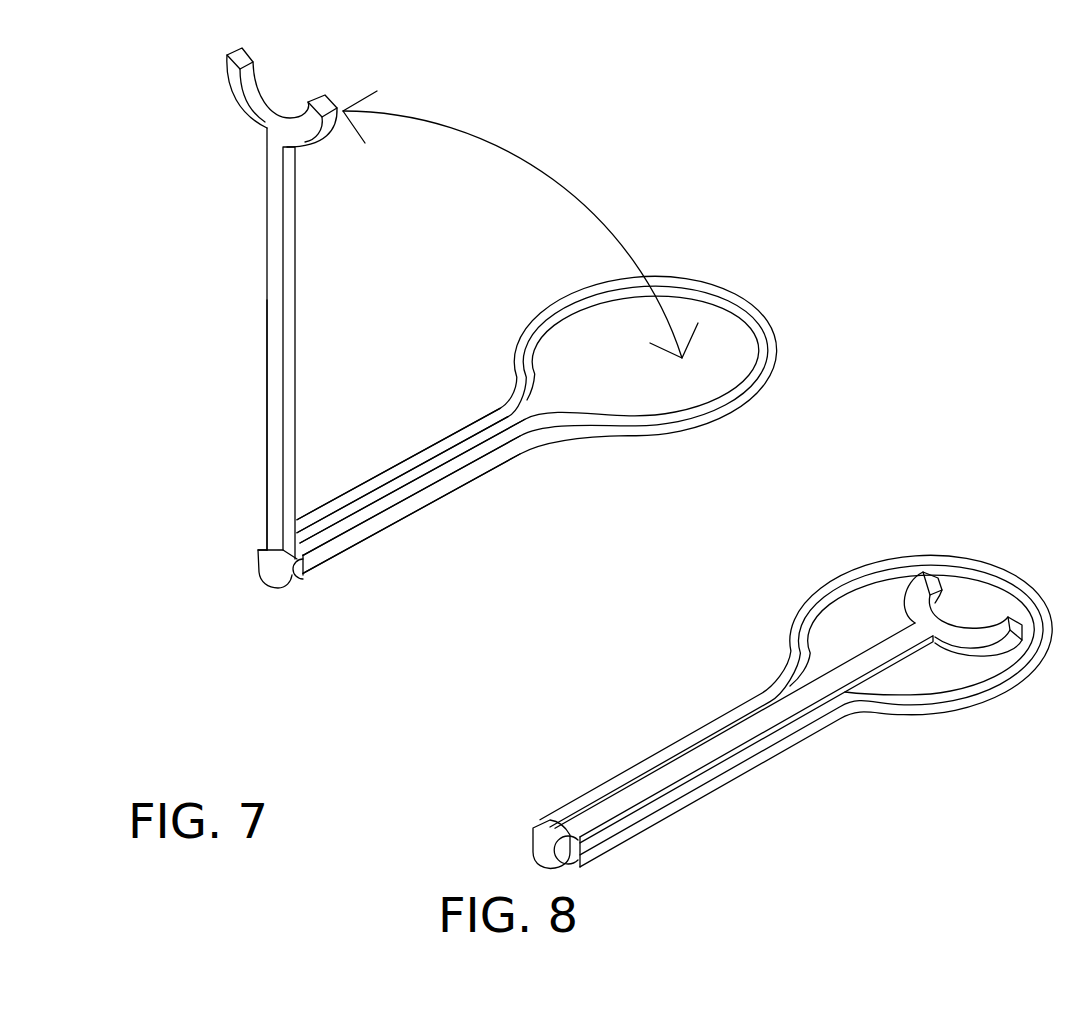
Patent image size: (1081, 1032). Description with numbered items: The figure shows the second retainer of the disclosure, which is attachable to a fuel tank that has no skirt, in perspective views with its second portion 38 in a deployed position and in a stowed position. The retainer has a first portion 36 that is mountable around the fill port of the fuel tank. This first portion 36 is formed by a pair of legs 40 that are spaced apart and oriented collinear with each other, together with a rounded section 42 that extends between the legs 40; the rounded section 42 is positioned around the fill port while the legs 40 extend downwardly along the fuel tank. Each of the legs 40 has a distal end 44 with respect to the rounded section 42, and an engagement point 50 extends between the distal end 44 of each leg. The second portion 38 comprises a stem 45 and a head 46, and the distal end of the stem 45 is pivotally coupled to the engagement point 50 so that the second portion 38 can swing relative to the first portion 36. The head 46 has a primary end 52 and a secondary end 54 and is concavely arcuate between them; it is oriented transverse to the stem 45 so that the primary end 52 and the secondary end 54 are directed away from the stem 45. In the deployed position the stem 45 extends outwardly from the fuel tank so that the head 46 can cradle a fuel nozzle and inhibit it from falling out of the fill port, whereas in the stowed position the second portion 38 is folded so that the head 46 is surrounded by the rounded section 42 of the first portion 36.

The first portion 36 is at (590, 375).
The second portion 38 is at (265, 341).
The legs 40 is at (412, 455).
The rounded section 42 is at (775, 352).
The distal end 44 is at (258, 556).
The stem 45 is at (267, 420).
The head 46 is at (265, 81).
The engagement point 50 is at (298, 556).
The primary end 52 is at (240, 53).
The secondary end 54 is at (320, 102).